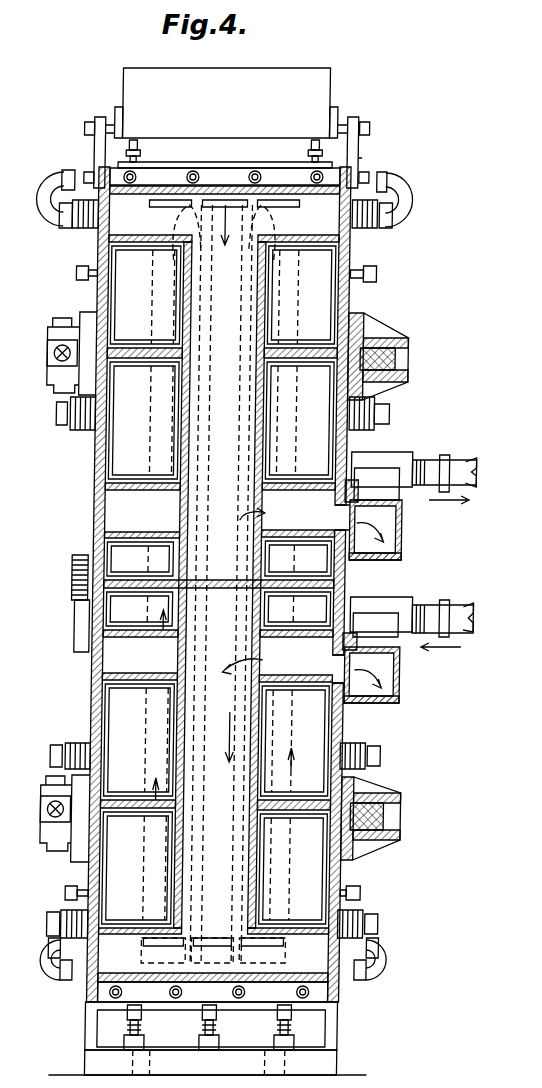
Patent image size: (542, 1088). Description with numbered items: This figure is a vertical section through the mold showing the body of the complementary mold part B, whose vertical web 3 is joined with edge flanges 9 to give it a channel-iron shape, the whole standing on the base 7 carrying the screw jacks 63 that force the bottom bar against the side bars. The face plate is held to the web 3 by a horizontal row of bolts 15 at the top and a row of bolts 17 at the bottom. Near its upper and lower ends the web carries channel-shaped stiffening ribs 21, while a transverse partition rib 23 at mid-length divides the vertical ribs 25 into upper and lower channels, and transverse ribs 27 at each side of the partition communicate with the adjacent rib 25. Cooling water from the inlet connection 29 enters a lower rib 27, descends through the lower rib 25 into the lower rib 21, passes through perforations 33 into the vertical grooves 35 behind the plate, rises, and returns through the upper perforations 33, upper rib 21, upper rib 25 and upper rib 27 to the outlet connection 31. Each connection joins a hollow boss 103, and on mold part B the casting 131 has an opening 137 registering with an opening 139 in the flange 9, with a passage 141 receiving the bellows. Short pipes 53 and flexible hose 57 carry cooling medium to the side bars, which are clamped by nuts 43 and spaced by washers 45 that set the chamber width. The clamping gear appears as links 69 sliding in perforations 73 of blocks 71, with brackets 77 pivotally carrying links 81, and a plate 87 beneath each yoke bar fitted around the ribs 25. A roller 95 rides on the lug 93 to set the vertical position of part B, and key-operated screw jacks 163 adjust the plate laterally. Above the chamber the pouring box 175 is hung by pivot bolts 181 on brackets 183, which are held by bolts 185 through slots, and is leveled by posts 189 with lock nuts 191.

The web 3 is at (201, 586).
The base 7 is at (184, 1060).
The edge flange 9 is at (99, 468).
The bolts 15 is at (200, 168).
The bolts 17 is at (186, 994).
The transverse stiffening rib 21 is at (304, 252).
The transverse partition rib 23 is at (218, 580).
The vertical ribs 25 is at (186, 432).
The transverse ribs 27 is at (128, 483).
The inlet connection 29 is at (475, 605).
The outlet connection 31 is at (478, 460).
The perforations 33 is at (162, 207).
The vertical longitudinal grooves 35 is at (152, 412).
The nuts 43 is at (60, 222).
The washers 45 is at (85, 229).
The pipe 53 is at (88, 172).
The flexible hose 57 is at (46, 185).
The screw jacks 63 is at (143, 1022).
The links 69 is at (411, 356).
The blocks 71 is at (411, 376).
The perforations 73 is at (386, 343).
The brackets 77 is at (50, 331).
The links 81 is at (57, 353).
The plate 87 is at (136, 349).
The lug 93 is at (81, 631).
The roller 95 is at (78, 563).
The hollow boss 103 is at (398, 455).
The casting 131 is at (407, 546).
The opening 137 is at (350, 518).
The opening 139 is at (364, 525).
The passage 141 is at (398, 557).
The key-operated screw jacks 163 is at (78, 273).
The pouring box 175 is at (122, 86).
The pivot bolts 181 is at (84, 126).
The brackets 183 is at (94, 140).
The bolts 185 is at (362, 158).
The posts 189 is at (140, 158).
The lock nuts 191 is at (226, 152).
The mold part B is at (99, 507).